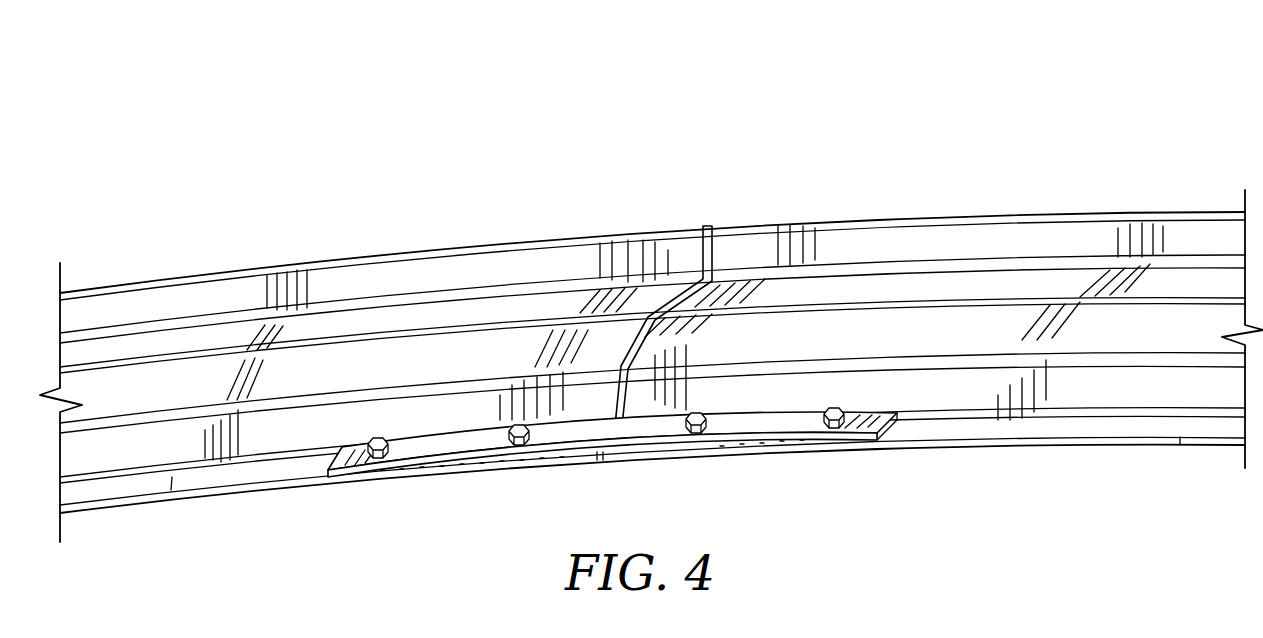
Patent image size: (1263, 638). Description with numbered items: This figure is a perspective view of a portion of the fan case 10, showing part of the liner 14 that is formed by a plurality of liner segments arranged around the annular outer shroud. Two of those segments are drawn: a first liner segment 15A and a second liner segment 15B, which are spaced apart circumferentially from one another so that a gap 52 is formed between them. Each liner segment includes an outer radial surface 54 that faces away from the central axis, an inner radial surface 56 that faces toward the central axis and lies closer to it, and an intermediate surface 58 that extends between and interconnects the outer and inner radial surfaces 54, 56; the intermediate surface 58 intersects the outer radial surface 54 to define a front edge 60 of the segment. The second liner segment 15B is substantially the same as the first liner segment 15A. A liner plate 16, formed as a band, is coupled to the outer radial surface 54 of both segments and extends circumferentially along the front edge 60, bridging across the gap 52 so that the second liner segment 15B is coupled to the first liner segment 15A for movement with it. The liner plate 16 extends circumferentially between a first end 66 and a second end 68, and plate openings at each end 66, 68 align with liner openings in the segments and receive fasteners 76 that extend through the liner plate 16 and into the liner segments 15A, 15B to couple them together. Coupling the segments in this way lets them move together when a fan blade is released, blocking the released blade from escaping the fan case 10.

The fan case 10 is at (300, 142).
The liner 14 is at (792, 182).
The first liner segment 15A is at (438, 232).
The second liner segment 15B is at (1037, 192).
The gap 52 is at (713, 220).
The outer radial surface 54 is at (310, 470).
The inner radial surface 56 is at (169, 500).
The intermediate surface 58 is at (240, 485).
The front edge 60 is at (264, 482).
The liner plate 16 is at (790, 447).
The first end 66 is at (340, 500).
The second end 68 is at (848, 458).
The fasteners 76 is at (380, 436).